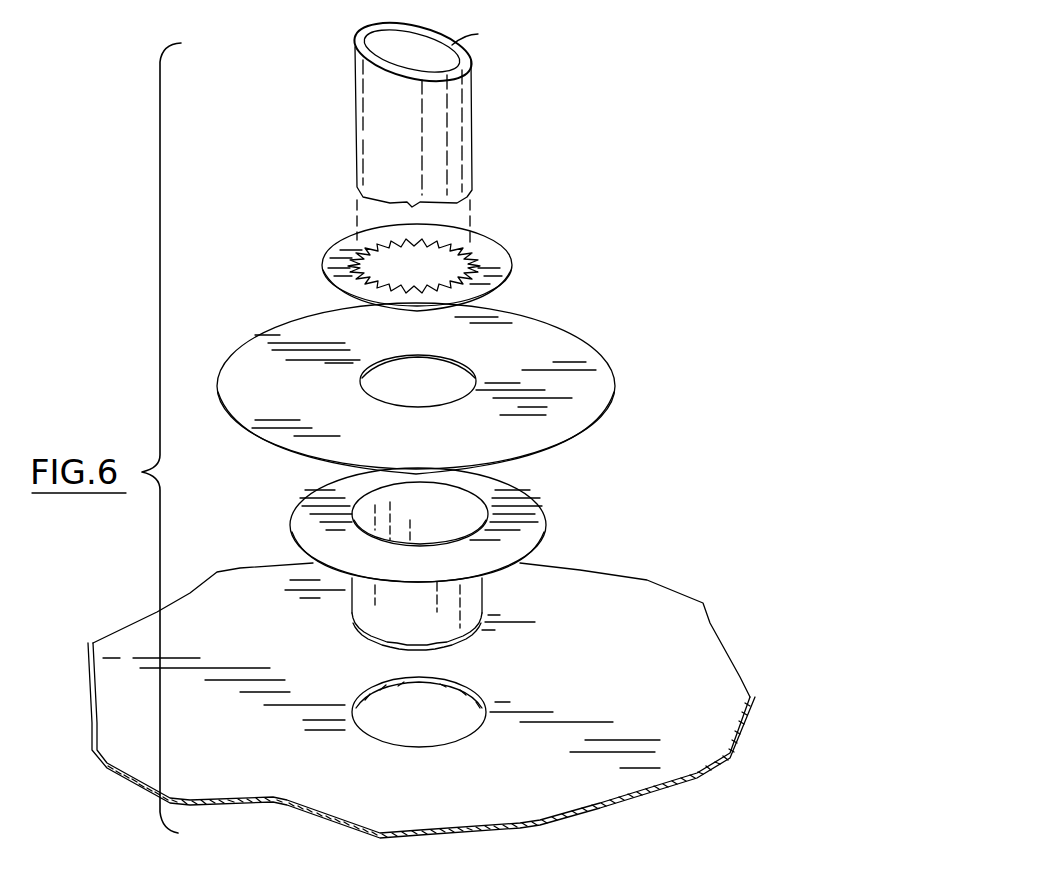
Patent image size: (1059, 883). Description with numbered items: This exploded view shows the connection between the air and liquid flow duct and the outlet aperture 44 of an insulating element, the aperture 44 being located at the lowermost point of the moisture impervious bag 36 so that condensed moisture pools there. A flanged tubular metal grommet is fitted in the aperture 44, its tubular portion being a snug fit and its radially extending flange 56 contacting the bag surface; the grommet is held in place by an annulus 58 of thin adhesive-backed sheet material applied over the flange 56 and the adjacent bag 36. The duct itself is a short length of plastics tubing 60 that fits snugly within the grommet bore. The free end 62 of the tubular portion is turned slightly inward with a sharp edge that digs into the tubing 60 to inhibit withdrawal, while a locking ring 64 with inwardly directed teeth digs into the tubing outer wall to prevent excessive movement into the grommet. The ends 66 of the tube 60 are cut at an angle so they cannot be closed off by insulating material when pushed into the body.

The bag 36 is at (421, 682).
The outlet aperture 44 is at (463, 687).
The flange 56 is at (525, 497).
The annulus 58 is at (542, 325).
The tubing 60 is at (458, 117).
The free end of the tubular portion 62 is at (365, 630).
The locking ring 64 is at (498, 248).
The tube end 66 is at (482, 35).